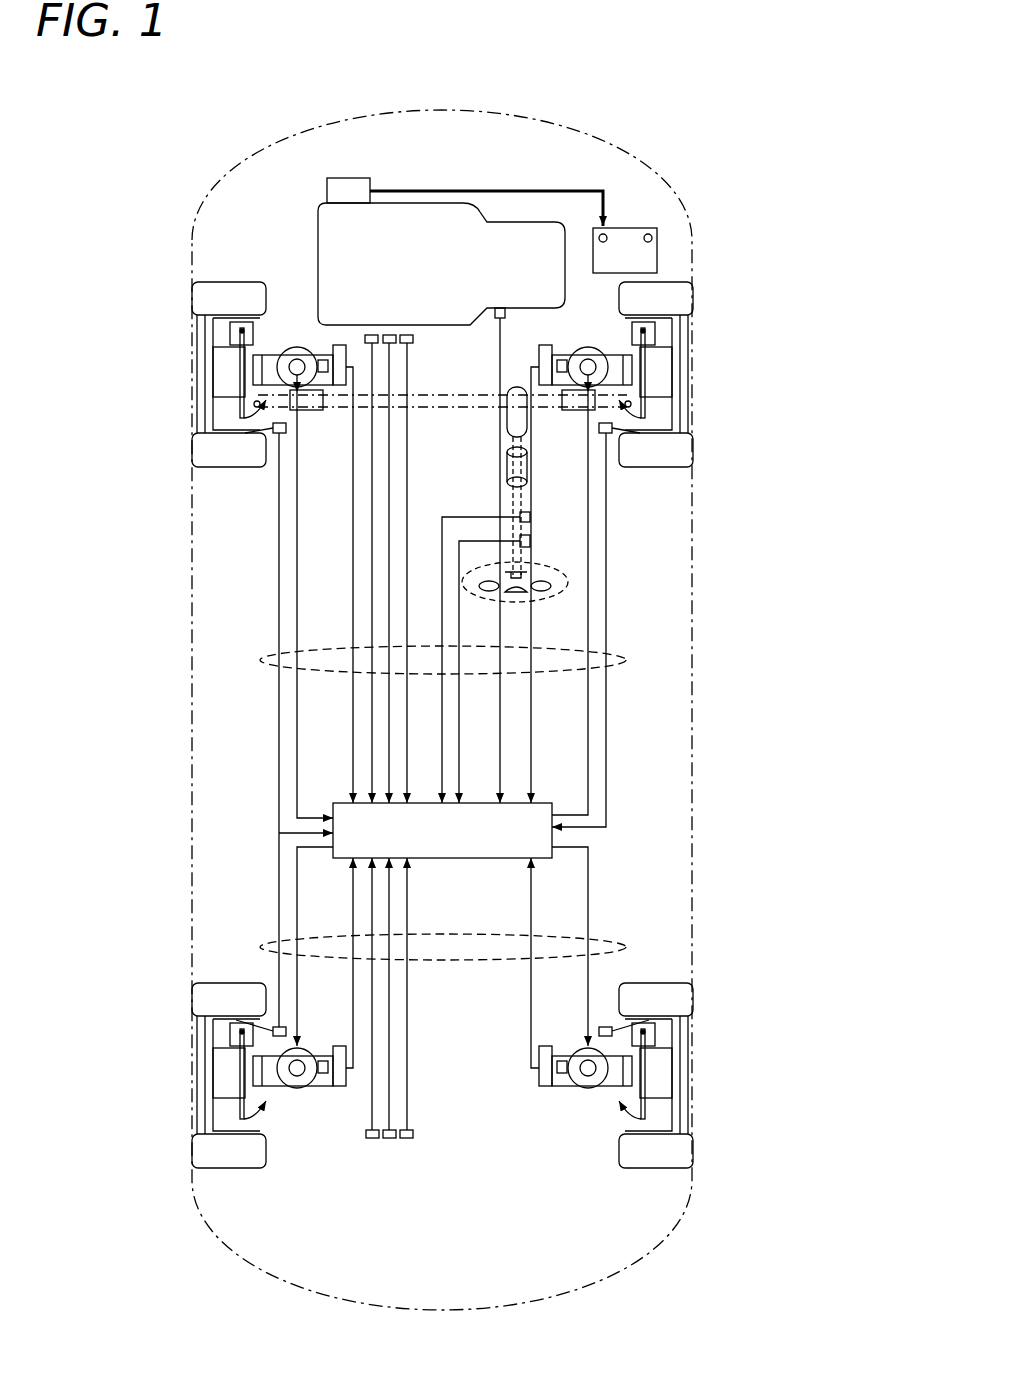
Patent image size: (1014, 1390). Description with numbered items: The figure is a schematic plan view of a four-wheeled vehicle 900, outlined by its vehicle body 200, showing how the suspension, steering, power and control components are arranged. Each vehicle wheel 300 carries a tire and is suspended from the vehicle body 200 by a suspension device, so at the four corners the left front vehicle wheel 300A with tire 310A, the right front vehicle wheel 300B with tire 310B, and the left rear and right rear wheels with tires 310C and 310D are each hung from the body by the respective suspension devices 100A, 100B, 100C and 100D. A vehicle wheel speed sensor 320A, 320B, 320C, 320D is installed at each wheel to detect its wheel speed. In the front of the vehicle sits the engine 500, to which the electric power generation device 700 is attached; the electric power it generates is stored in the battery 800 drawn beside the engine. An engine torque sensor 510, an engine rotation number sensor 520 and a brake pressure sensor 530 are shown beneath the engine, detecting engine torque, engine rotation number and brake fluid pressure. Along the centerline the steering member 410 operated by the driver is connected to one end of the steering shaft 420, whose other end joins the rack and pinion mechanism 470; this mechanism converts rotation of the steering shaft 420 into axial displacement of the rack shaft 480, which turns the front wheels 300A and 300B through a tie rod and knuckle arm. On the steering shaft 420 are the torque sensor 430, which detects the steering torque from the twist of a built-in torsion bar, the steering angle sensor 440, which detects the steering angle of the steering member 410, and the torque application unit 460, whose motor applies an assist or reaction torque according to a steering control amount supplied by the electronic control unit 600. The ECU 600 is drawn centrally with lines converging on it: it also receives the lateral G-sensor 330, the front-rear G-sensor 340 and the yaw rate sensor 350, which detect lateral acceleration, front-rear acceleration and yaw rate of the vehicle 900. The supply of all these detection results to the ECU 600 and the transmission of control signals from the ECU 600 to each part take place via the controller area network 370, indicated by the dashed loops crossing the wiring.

The vehicle 900 is at (667, 64).
The vehicle body 200 is at (672, 201).
The electric power generation device 700 is at (352, 180).
The battery 800 is at (655, 258).
The engine 500 is at (325, 258).
The engine torque sensor 510 is at (373, 334).
The engine rotation number sensor 520 is at (390, 334).
The brake pressure sensor 530 is at (407, 334).
The vehicle wheel 300A is at (205, 333).
The vehicle wheel 300B is at (680, 333).
The vehicle wheel 300 is at (203, 1035).
The tire 310A is at (205, 458).
The tire 310B is at (680, 458).
The tire 310C is at (205, 1160).
The tire 310D is at (680, 1160).
The vehicle wheel speed sensor 320A is at (266, 433).
The vehicle wheel speed sensor 320B is at (619, 433).
The vehicle wheel speed sensor 320C is at (240, 1020).
The vehicle wheel speed sensor 320D is at (645, 1020).
The suspension device 100A is at (205, 421).
The suspension device 100B is at (680, 421).
The suspension device 100C is at (205, 1123).
The suspension device 100D is at (680, 1123).
The rack shaft 480 is at (430, 395).
The rack and pinion mechanism 470 is at (507, 418).
The torque application unit 460 is at (527, 464).
The steering angle sensor 440 is at (530, 518).
The torque sensor 430 is at (530, 541).
The steering shaft 420 is at (533, 552).
The steering member 410 is at (570, 585).
The controller area network (CAN) 370 is at (623, 947).
The electronic control unit (ECU) 600 is at (436, 860).
The yaw rate sensor 350 is at (378, 1138).
The front-rear G-sensor 340 is at (392, 1138).
The lateral G-sensor 330 is at (407, 1138).